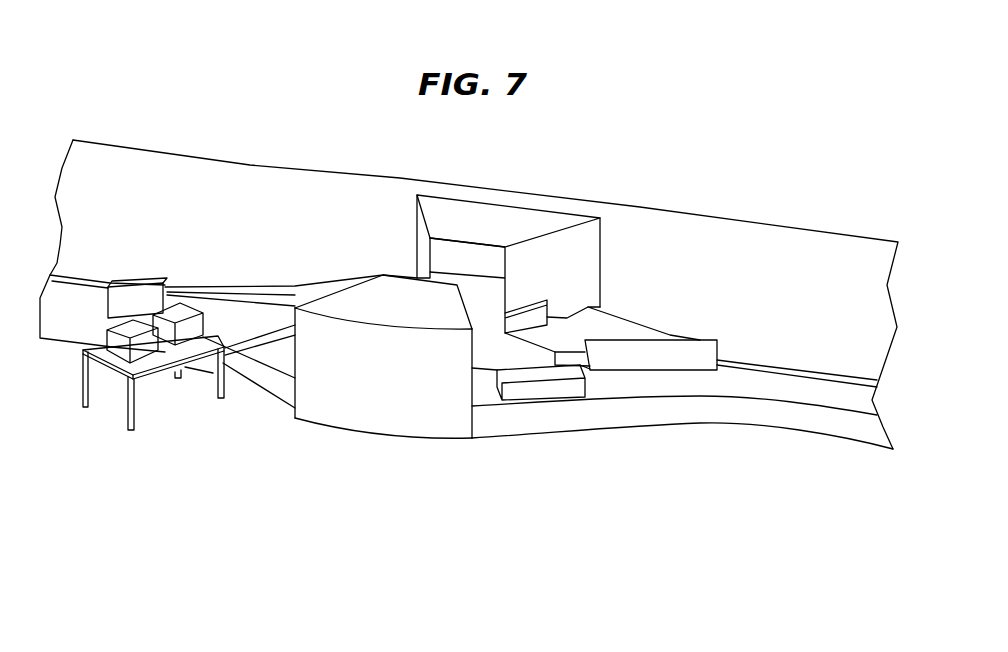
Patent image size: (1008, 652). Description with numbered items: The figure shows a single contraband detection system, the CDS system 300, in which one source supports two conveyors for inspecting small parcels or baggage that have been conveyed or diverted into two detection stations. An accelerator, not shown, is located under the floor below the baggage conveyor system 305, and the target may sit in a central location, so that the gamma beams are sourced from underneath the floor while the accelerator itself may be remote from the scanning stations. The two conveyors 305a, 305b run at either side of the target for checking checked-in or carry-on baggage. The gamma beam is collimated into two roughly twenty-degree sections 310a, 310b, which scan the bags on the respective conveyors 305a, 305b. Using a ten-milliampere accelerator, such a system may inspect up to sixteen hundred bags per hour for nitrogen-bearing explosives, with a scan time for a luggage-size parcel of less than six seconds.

The CDS system 300 is at (476, 159).
The baggage conveyor system 305 is at (643, 140).
The conveyor 305a is at (630, 314).
The conveyor 305b is at (596, 412).
The collimated gamma beam section 310a is at (510, 233).
The collimated gamma beam section 310b is at (407, 398).